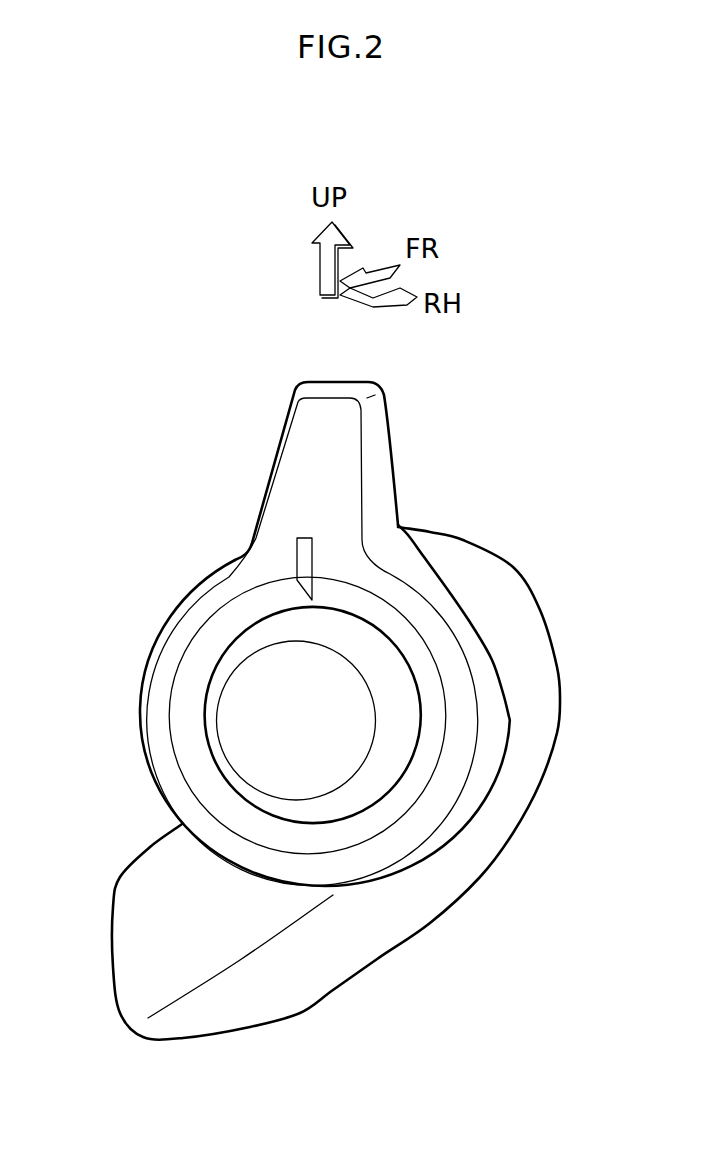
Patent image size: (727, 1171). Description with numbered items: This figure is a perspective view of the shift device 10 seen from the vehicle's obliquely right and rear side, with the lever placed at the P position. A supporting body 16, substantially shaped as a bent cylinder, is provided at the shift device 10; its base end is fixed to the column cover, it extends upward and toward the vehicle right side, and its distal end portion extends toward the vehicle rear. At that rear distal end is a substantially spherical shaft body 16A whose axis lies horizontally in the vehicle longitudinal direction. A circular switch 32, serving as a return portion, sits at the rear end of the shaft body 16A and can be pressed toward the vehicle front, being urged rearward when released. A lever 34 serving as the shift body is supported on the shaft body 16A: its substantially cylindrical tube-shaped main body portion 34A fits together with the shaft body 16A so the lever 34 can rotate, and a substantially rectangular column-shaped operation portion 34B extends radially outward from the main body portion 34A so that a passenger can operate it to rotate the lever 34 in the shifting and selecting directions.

The shift device 10 is at (153, 490).
The supporting body 16 is at (403, 940).
The shaft body 16A is at (240, 647).
The switch 32 is at (242, 763).
The lever 34 is at (140, 708).
The main body portion 34A is at (502, 710).
The operation portion 34B is at (385, 455).